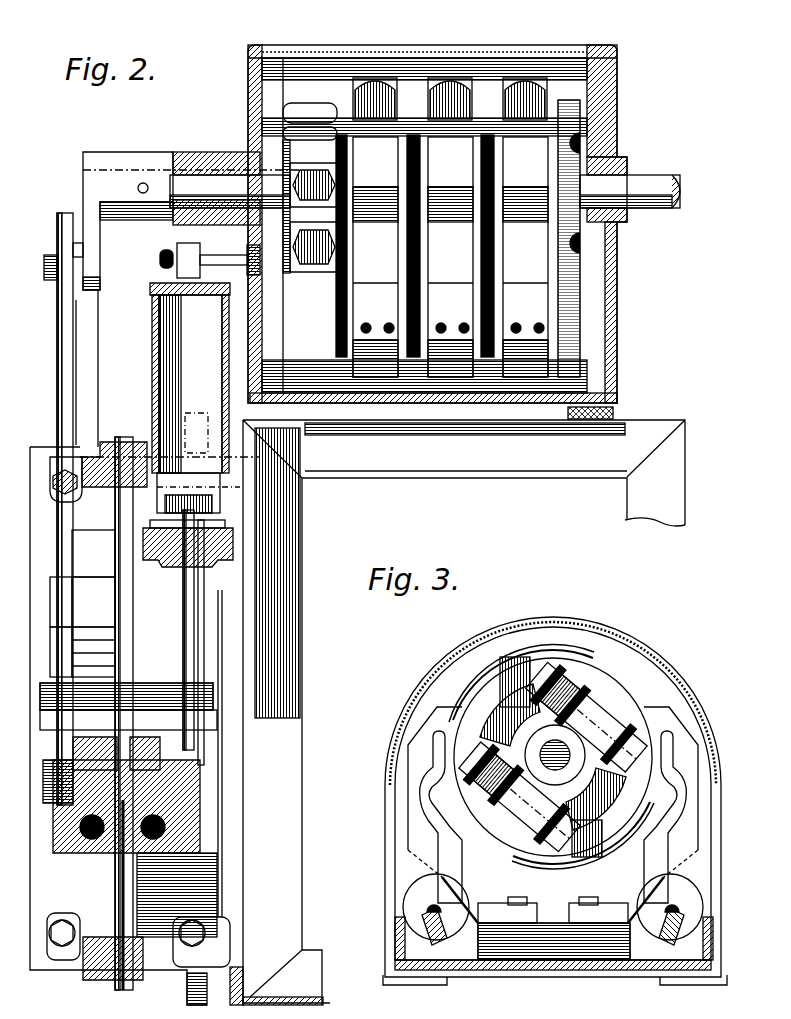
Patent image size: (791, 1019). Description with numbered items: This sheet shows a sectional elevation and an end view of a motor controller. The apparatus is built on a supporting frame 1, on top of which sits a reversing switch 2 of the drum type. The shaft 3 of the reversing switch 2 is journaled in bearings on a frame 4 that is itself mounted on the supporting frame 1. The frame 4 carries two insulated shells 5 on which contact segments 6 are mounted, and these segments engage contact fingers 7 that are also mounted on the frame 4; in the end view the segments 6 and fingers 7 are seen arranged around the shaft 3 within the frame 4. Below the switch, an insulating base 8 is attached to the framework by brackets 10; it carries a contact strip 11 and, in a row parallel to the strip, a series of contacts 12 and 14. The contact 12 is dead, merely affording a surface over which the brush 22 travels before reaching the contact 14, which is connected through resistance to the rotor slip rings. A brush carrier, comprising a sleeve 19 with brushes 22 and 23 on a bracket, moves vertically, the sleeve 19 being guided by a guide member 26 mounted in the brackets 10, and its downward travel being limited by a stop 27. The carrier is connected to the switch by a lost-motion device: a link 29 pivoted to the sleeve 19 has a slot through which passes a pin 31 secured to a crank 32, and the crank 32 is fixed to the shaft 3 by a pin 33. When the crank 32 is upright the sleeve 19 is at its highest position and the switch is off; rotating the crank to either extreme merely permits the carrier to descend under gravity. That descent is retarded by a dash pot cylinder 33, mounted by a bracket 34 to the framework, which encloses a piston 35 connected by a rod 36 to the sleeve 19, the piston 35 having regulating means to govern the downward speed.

In FIG. 2, the supporting frame 1 is at (655, 428).
In FIG. 2, the reversing switch 2 is at (588, 143).
In FIG. 2, the shaft 3 is at (206, 180).
In FIG. 3, the shaft 3 is at (548, 767).
In FIG. 2, the frame 4 is at (612, 358).
In FIG. 3, the frame 4 is at (722, 892).
In FIG. 2, the insulated shell 5 is at (450, 162).
In FIG. 3, the insulated shell 5 is at (503, 705).
In FIG. 2, the contact segment 6 is at (385, 92).
In FIG. 3, the contact segment 6 is at (594, 660).
In FIG. 2, the contact finger 7 is at (442, 272).
In FIG. 3, the contact finger 7 is at (420, 807).
In FIG. 2, the base 8 is at (93, 553).
In FIG. 2, the bracket 10 is at (72, 478).
In FIG. 2, the contact strip 11 is at (203, 638).
In FIG. 2, the contact 12 is at (82, 602).
In FIG. 2, the contact 14 is at (88, 668).
In FIG. 2, the sleeve 19 is at (68, 830).
In FIG. 2, the brush 22 is at (108, 688).
In FIG. 2, the brush 23 is at (175, 694).
In FIG. 2, the guide member 26 is at (120, 845).
In FIG. 2, the stop 27 is at (110, 915).
In FIG. 2, the link 29 is at (65, 400).
In FIG. 2, the pin 31 is at (48, 272).
In FIG. 2, the crank 32 is at (92, 258).
In FIG. 2, the dash pot cylinder 33 is at (141, 184).
In FIG. 2, the bracket 34 is at (222, 250).
In FIG. 2, the piston 35 is at (200, 488).
In FIG. 2, the rod 36 is at (190, 597).